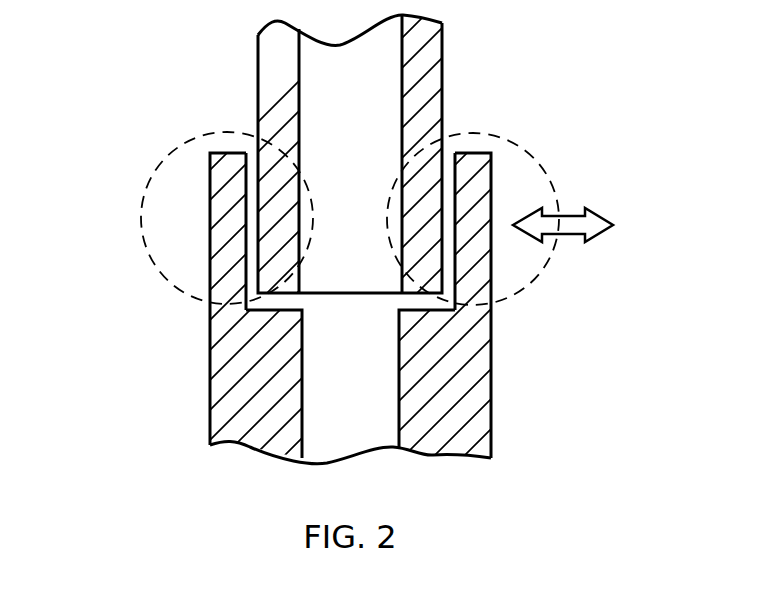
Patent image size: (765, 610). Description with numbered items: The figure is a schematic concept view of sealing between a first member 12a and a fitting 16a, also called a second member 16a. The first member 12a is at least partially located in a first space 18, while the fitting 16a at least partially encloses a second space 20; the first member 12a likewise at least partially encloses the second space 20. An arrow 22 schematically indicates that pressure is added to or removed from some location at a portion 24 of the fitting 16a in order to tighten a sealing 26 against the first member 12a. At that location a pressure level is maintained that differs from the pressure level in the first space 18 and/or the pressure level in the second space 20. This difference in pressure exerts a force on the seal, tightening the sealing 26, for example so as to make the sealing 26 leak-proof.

The first member 12a is at (443, 50).
The fitting or second member 16a is at (490, 372).
The first space 18 is at (121, 58).
The second space 20 is at (373, 394).
The arrow 22 is at (598, 214).
The portion of the fitting 24 is at (140, 218).
The sealing 26 is at (258, 220).